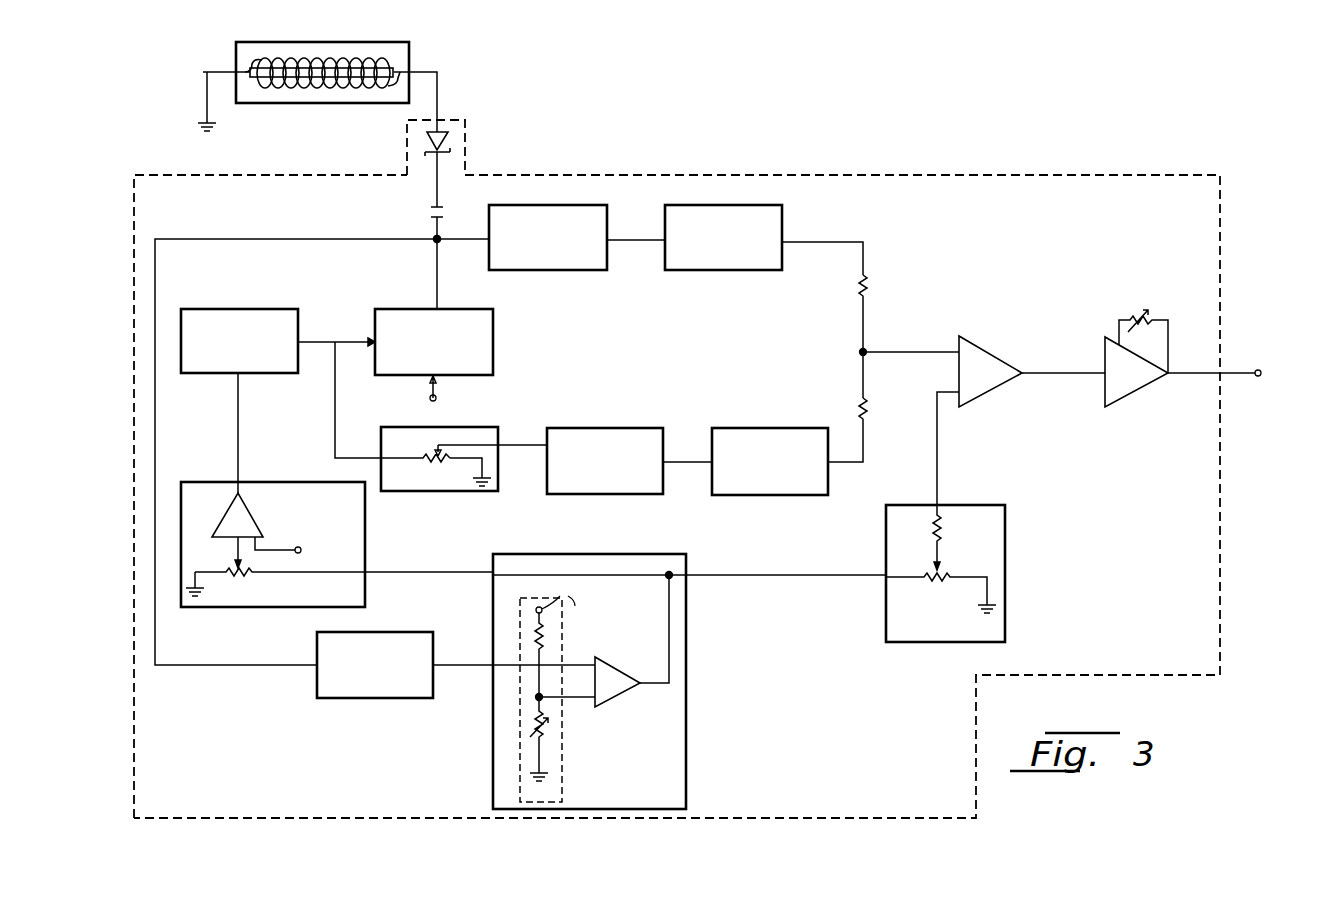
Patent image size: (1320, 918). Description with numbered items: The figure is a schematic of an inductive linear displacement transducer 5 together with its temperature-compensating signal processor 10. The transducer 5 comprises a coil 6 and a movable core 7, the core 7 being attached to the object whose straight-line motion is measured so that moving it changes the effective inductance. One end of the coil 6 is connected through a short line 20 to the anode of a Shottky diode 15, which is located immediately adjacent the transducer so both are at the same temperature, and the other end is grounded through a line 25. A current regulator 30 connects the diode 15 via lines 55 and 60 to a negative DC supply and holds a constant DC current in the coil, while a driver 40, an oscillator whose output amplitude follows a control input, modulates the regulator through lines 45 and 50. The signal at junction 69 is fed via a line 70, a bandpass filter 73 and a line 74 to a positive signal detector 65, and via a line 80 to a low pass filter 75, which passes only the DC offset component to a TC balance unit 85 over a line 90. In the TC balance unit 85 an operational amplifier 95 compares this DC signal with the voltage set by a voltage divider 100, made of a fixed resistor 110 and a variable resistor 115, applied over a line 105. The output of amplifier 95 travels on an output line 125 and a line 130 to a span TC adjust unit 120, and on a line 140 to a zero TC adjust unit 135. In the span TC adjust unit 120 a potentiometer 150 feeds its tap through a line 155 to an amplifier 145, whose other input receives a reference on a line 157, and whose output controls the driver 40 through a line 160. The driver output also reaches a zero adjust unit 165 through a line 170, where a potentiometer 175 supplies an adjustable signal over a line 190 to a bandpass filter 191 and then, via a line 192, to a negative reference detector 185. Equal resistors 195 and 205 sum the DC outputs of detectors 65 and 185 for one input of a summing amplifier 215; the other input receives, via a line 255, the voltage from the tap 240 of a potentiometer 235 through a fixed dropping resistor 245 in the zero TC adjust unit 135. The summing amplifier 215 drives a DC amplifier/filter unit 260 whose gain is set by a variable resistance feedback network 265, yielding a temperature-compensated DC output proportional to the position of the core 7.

The inductive linear displacement transducer 5 is at (350, 42).
The coil 6 is at (287, 60).
The core 7 is at (328, 78).
The temperature-compensating signal processor 10 is at (468, 146).
The diode 15 is at (448, 140).
The line 20 is at (437, 72).
The line 25 is at (215, 72).
The current regulator 30 is at (475, 309).
The driver 40 is at (261, 309).
The line 45 is at (352, 342).
The line 50 is at (328, 342).
The line 55 is at (437, 272).
The line 60 is at (437, 180).
The positive signal detector 65 is at (748, 205).
The node or junction 69 is at (435, 237).
The line 70 is at (478, 239).
The bandpass filter 73 is at (584, 205).
The line 74 is at (643, 240).
The low pass filter 75 is at (400, 698).
The line 80 is at (218, 239).
The TC balance unit 85 is at (686, 760).
The line 90 is at (485, 665).
The operational amplifier 95 is at (617, 663).
The voltage divider 100 is at (562, 780).
The line 105 is at (576, 700).
The fixed resistor 110 is at (548, 634).
The variable resistor 115 is at (548, 733).
The span TC adjust unit 120 is at (368, 597).
The output line 125 is at (670, 632).
The line 130 is at (443, 572).
The zero TC adjust unit 135 is at (990, 505).
The line 140 is at (824, 575).
The amplifier 145 is at (250, 510).
The potentiometer 150 is at (240, 576).
The line 155 is at (236, 556).
The line 157 is at (302, 553).
The line 160 is at (240, 435).
The zero adjust unit 165 is at (400, 427).
The line 170 is at (334, 385).
The potentiometer 175 is at (436, 463).
The negative reference detector 185 is at (790, 428).
The line 190 is at (535, 445).
The bandpass filter 191 is at (596, 428).
The line 192 is at (690, 462).
The resistor 195 is at (869, 288).
The resistor 205 is at (869, 411).
The summing amplifier 215 is at (988, 355).
The potentiometer 235 is at (940, 585).
The tap 240 is at (940, 556).
The fixed dropping resistor 245 is at (945, 527).
The line 255 is at (940, 463).
The DC amplifier/filter unit 260 is at (1135, 392).
The variable resistance feedback network 265 is at (1152, 313).